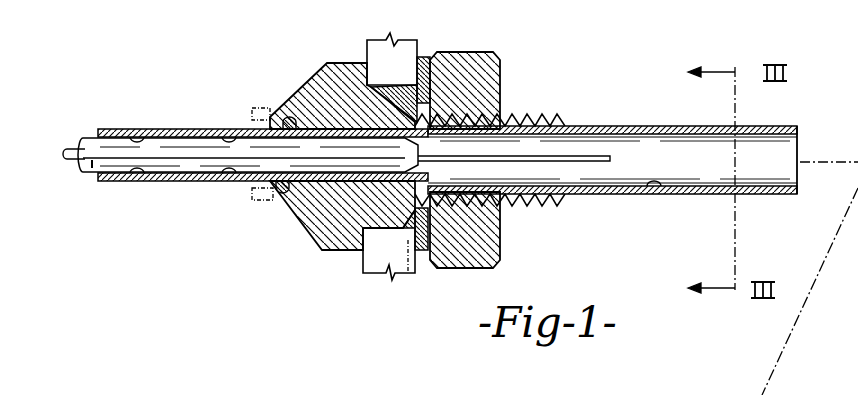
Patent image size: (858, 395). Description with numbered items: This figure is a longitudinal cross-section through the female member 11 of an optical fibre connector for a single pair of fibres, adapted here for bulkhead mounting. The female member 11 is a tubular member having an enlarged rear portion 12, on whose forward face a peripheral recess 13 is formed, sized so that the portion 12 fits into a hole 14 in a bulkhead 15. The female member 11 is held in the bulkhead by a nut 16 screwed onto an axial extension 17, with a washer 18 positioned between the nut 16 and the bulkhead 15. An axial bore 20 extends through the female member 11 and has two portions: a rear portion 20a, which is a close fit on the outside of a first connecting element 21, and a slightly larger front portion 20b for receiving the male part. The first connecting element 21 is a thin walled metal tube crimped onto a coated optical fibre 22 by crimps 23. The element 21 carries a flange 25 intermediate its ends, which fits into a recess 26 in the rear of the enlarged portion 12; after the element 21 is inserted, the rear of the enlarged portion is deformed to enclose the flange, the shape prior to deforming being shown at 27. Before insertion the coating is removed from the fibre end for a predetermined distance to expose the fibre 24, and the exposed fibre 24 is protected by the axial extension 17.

The female member 11 is at (576, 105).
The enlarged rear portion 12 is at (345, 251).
The peripheral recess 13 is at (384, 275).
The hole 14 is at (421, 62).
The bulkhead 15 is at (367, 52).
The nut 16 is at (500, 99).
The axial extension 17 is at (650, 126).
The washer 18 is at (422, 251).
The axial bore 20 is at (527, 176).
The rear portion of bore 20a is at (330, 183).
The front portion of bore 20b is at (655, 195).
The first connecting element 21 is at (186, 129).
The coated optical fibre 22 is at (90, 168).
The crimps 23 is at (228, 182).
The exposed fibre 24 is at (606, 166).
The flange 25 is at (282, 193).
The recess 26 is at (289, 117).
The shape of enlarged portion prior to deforming 27 is at (257, 108).